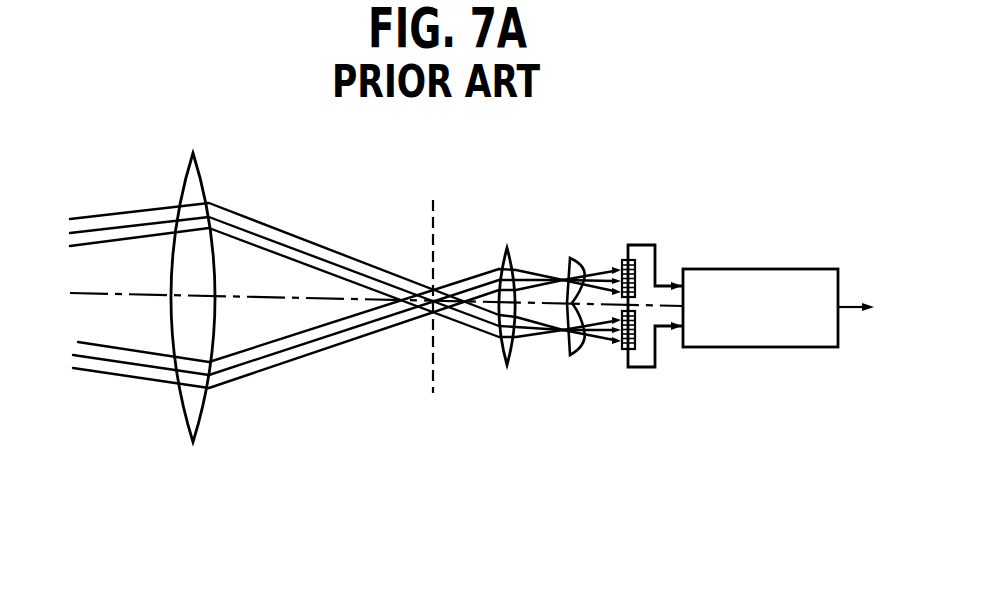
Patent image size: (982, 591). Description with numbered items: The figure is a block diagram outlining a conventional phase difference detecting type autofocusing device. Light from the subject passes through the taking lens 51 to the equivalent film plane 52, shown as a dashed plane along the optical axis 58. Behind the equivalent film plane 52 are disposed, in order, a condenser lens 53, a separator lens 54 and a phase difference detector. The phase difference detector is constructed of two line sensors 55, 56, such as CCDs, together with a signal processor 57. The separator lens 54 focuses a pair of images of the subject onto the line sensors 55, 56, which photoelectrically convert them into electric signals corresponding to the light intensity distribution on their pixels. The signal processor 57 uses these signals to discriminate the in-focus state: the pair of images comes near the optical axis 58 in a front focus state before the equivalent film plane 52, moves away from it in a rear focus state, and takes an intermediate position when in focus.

The taking lens 51 is at (207, 176).
The equivalent film plane 52 is at (436, 235).
The condenser lens 53 is at (503, 354).
The separator lens 54 is at (571, 352).
The line sensor 55 is at (623, 261).
The line sensor 56 is at (624, 348).
The signal processor 57 is at (732, 268).
The optical axis 58 is at (92, 291).